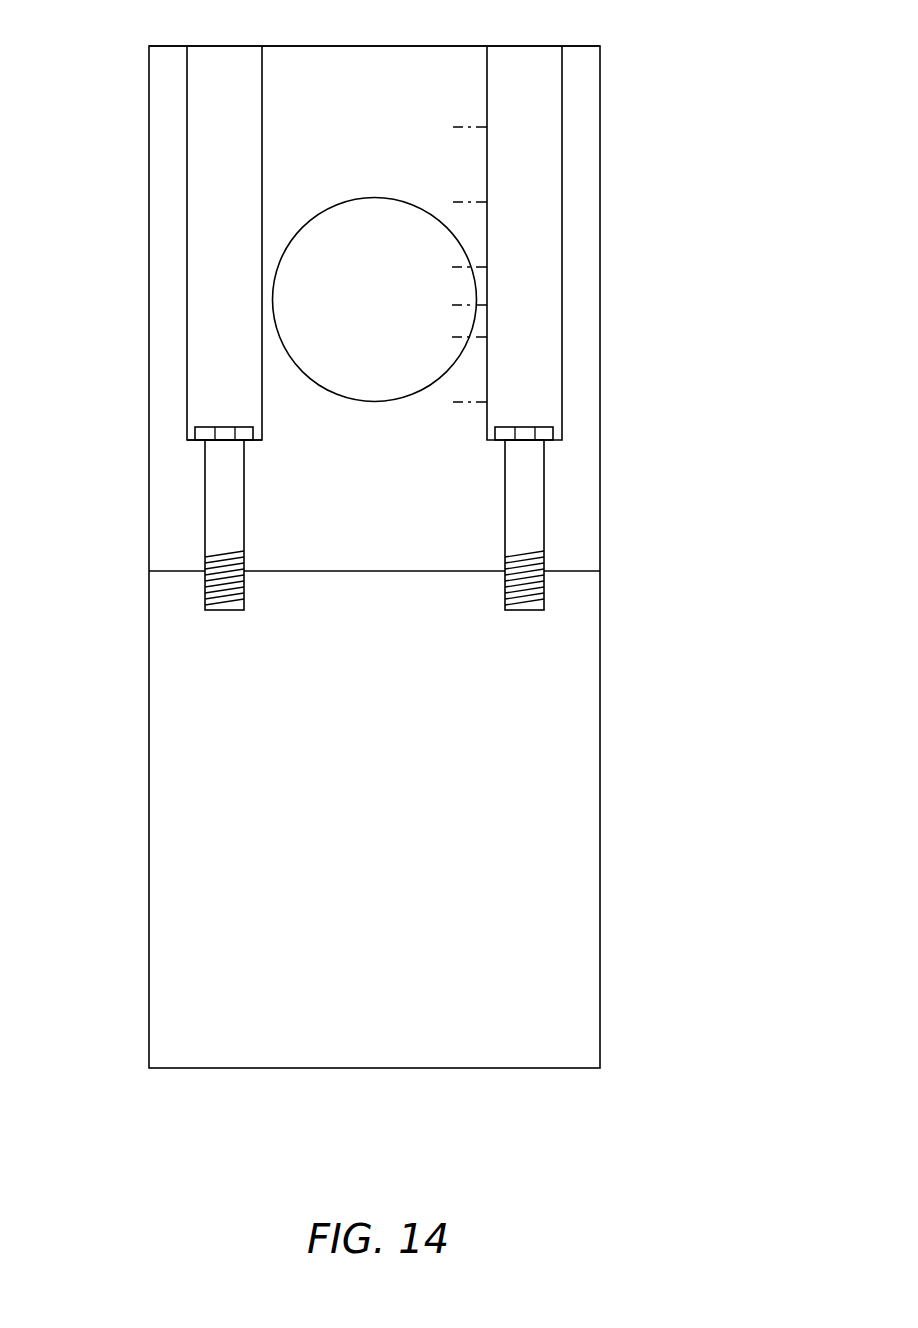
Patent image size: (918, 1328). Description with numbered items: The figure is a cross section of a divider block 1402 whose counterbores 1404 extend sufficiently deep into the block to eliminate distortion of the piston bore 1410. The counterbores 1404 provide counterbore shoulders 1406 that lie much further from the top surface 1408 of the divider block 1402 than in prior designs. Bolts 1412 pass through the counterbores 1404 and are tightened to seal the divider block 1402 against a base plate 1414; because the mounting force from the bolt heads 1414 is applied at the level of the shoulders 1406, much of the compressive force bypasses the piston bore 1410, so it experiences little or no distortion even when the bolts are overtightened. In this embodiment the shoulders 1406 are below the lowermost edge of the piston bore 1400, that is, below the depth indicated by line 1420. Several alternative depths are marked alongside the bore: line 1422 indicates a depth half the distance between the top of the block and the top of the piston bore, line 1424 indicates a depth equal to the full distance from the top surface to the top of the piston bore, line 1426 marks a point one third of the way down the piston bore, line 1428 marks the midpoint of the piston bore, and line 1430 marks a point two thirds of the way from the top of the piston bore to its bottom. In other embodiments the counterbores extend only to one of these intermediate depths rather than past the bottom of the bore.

The piston bore 1400 is at (668, 270).
The divider block 1402 is at (600, 180).
The counterbores 1404 is at (187, 201).
The counterbore shoulders 1406 is at (192, 442).
The top surface 1408 is at (356, 46).
The piston bore 1410 is at (397, 197).
The bolts 1412 is at (222, 548).
The base plate 1414 is at (224, 425).
The line 1420 is at (456, 405).
The line 1422 is at (462, 123).
The line 1424 is at (453, 198).
The line 1426 is at (458, 266).
The line 1428 is at (463, 305).
The line 1430 is at (463, 338).